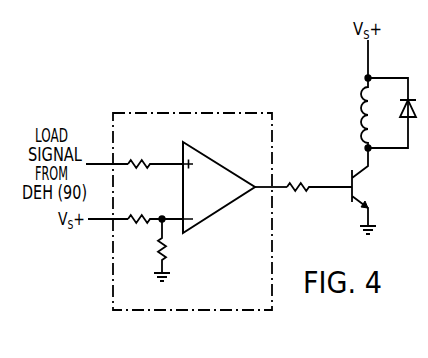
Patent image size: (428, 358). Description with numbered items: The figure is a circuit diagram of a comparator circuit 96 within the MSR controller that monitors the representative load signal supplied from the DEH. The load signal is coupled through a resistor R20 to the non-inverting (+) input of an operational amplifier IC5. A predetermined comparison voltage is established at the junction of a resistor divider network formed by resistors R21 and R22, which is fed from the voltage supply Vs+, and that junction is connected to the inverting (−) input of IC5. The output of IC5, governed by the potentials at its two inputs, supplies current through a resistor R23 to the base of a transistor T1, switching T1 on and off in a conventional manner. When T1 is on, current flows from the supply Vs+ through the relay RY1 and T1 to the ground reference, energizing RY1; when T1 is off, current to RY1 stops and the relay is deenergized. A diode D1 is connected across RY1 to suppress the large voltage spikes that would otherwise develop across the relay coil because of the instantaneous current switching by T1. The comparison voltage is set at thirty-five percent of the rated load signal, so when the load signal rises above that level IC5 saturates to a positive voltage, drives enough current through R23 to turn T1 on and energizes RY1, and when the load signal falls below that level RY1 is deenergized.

The comparator circuit 96 is at (192, 113).
The resistor R20 is at (148, 157).
The resistor R21 is at (148, 212).
The resistor R22 is at (169, 250).
The resistor R23 is at (306, 179).
The operational amplifier IC5 is at (200, 222).
The relay RY1 is at (360, 110).
The diode D1 is at (397, 113).
The transistor T1 is at (372, 178).